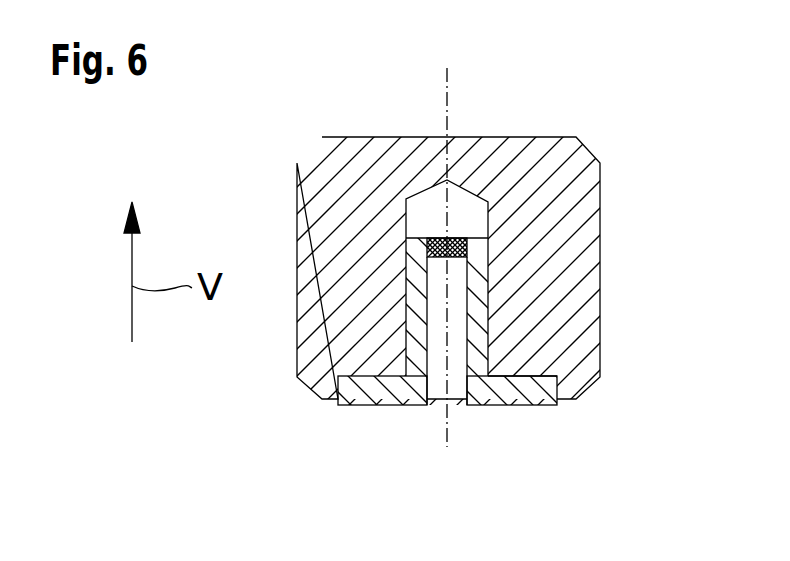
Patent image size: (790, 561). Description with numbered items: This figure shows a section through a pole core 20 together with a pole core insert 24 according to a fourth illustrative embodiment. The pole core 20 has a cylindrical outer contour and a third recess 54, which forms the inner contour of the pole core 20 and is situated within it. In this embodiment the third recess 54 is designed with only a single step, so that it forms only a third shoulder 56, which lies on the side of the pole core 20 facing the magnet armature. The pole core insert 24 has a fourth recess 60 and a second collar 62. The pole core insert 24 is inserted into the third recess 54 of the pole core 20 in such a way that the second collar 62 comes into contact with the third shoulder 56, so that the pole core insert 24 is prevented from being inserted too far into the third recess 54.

The pole core 20 is at (568, 195).
The pole core insert 24 is at (383, 392).
The third recess 54 is at (421, 228).
The third shoulder 56 is at (521, 366).
The fourth recess 60 is at (460, 297).
The second collar 62 is at (538, 390).